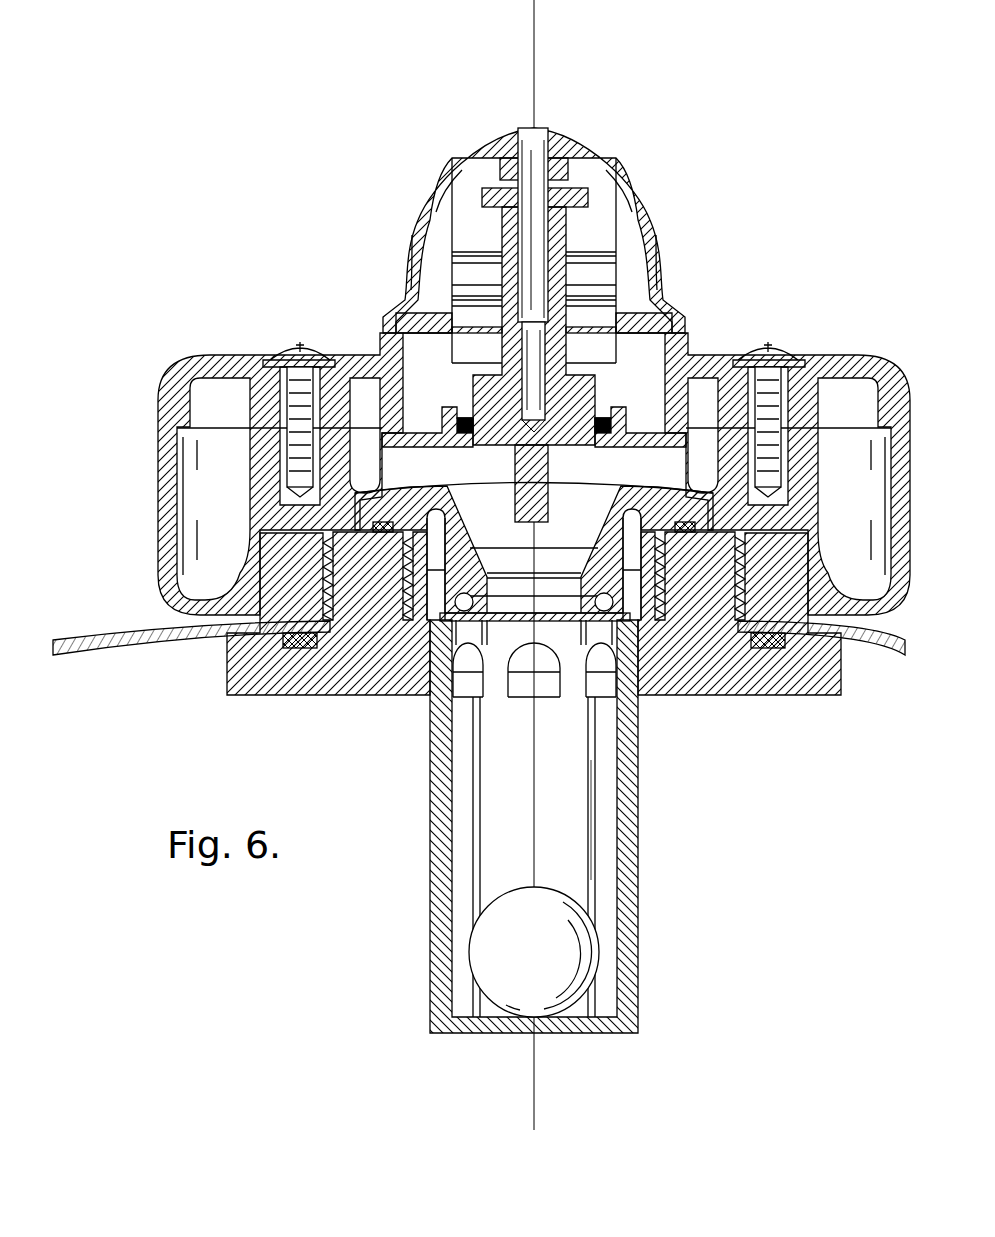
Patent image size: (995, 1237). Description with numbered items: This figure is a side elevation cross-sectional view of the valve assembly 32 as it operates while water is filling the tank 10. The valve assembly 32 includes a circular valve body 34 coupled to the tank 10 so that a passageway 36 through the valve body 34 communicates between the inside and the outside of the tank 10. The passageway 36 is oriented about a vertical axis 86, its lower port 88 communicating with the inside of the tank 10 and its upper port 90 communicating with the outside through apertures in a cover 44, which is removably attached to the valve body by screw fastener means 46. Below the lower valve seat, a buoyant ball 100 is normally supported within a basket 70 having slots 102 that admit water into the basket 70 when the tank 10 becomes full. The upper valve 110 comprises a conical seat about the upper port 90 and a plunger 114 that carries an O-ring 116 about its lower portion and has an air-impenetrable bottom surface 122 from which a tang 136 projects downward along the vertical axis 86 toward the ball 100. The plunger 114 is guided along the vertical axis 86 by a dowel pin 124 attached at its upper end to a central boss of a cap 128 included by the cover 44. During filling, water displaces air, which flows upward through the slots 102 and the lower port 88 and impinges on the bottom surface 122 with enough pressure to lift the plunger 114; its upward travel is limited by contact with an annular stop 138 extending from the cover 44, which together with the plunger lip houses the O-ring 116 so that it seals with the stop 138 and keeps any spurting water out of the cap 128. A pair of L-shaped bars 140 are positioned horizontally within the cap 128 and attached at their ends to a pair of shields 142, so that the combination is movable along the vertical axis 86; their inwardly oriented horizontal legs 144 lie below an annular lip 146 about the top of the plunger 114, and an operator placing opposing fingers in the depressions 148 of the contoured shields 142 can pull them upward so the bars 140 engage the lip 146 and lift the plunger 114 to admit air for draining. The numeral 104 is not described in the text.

The tank 10 is at (137, 638).
The valve assembly 32 is at (176, 348).
The valve body 34 is at (650, 497).
The passageway 36 is at (455, 635).
The cover 44 is at (855, 355).
The screw fastener means 46 is at (283, 345).
The basket 70 is at (632, 804).
The vertical axis 86 is at (540, 89).
The lower port 88 is at (638, 741).
The upper port 90 is at (565, 505).
The ball 100 is at (522, 938).
The slots 102 is at (608, 873).
The ball surface 104 is at (577, 882).
The upper valve 110 is at (697, 303).
The plunger 114 is at (558, 233).
The O-ring 116 is at (607, 410).
The bottom surface 122 is at (467, 448).
The dowel pin 124 is at (515, 148).
The cap 128 is at (587, 150).
The tang 136 is at (511, 465).
The annular stop 138 is at (468, 417).
The L-shaped bars 140 is at (604, 250).
The shields 142 is at (430, 178).
The horizontal legs 144 is at (467, 272).
The annular lip 146 is at (482, 222).
The depressions 148 is at (403, 245).